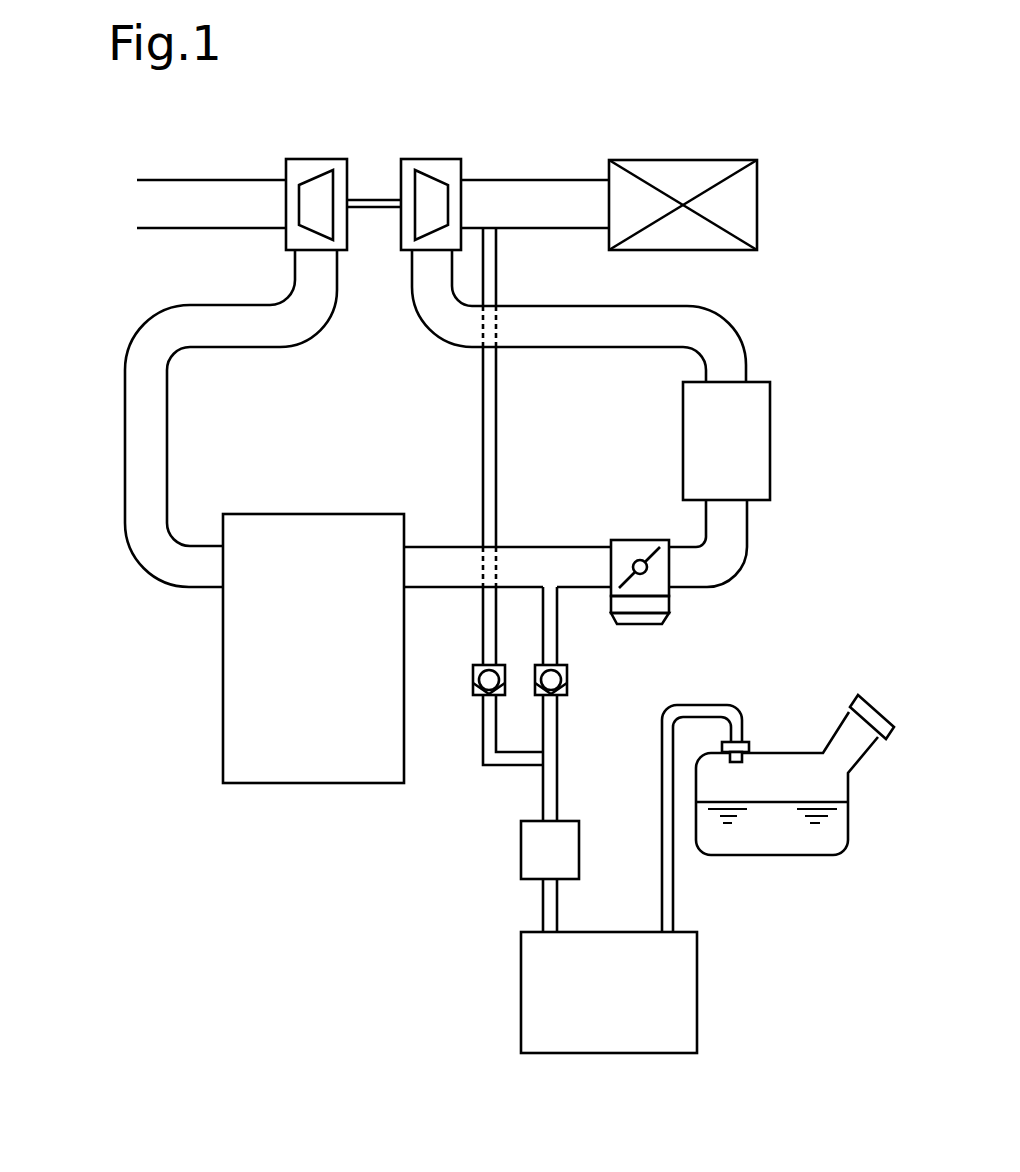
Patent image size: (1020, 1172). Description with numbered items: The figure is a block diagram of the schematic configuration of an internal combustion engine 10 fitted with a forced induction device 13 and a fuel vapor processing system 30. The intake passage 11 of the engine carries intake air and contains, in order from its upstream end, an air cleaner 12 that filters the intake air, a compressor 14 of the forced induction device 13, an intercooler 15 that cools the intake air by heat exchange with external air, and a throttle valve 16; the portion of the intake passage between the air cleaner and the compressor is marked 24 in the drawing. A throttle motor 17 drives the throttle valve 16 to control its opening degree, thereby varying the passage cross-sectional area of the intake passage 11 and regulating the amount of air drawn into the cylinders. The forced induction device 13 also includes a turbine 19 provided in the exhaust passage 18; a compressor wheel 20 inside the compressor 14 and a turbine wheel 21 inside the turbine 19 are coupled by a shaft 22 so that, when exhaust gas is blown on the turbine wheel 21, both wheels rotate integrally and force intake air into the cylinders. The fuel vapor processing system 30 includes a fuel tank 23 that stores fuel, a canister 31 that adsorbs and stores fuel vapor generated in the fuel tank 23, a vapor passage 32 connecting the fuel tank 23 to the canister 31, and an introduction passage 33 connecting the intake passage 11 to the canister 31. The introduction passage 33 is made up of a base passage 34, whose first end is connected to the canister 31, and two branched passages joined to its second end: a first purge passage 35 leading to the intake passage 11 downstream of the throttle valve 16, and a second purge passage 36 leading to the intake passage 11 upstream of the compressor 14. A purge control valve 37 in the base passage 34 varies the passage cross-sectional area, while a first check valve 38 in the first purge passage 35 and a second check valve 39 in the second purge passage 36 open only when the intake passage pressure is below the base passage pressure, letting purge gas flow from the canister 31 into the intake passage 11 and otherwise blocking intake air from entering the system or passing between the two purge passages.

The internal combustion engine 10 is at (313, 784).
The intake passage 11 is at (742, 340).
The air cleaner 12 is at (758, 207).
The forced induction device 13 is at (351, 180).
The compressor 14 is at (431, 158).
The intercooler 15 is at (771, 443).
The throttle valve 16 is at (646, 548).
The throttle motor 17 is at (637, 626).
The exhaust passage 18 is at (211, 178).
The turbine 19 is at (315, 158).
The compressor wheel 20 is at (430, 238).
The turbine wheel 21 is at (313, 233).
The shaft 22 is at (362, 210).
The fuel tank 23 is at (849, 817).
The upstream intake passage 24 is at (518, 178).
The fuel vapor processing system 30 is at (714, 830).
The canister 31 is at (698, 993).
The vapor passage 32 is at (675, 893).
The introduction passage 33 is at (544, 580).
The base passage 34 is at (558, 805).
The first purge passage 35 is at (594, 704).
The second purge passage 36 is at (511, 496).
The purge control valve 37 is at (520, 850).
The first check valve 38 is at (572, 705).
The second check valve 39 is at (507, 690).